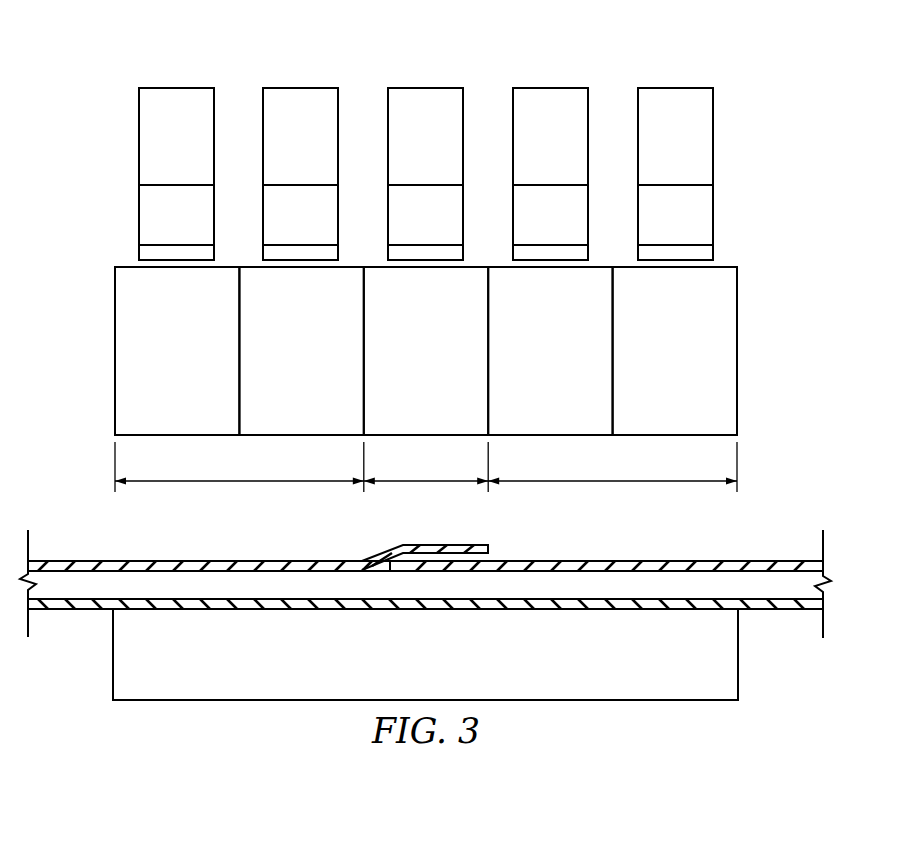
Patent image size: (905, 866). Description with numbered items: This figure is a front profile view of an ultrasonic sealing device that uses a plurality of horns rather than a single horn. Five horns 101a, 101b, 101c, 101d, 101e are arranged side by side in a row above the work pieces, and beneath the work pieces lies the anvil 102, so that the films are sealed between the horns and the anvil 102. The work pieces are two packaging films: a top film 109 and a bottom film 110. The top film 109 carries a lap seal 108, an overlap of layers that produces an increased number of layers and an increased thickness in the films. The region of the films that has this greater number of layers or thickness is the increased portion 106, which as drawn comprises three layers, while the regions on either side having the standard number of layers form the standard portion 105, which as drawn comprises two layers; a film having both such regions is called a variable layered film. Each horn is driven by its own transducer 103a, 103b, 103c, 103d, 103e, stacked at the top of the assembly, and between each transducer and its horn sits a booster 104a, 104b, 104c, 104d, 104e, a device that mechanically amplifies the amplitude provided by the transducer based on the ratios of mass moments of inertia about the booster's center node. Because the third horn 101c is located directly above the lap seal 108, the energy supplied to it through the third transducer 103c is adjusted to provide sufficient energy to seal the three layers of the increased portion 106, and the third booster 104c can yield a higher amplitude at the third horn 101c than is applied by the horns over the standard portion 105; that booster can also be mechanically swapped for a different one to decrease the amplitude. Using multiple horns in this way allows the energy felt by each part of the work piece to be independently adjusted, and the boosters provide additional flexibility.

The first horn 101a is at (151, 368).
The second horn 101b is at (328, 368).
The third horn 101c is at (400, 368).
The fourth horn 101d is at (524, 368).
The fifth horn 101e is at (701, 368).
The anvil 102 is at (113, 645).
The first transducer 103a is at (176, 88).
The second transducer 103b is at (301, 88).
The third transducer 103c is at (425, 88).
The fourth transducer 103d is at (551, 88).
The fifth transducer 103e is at (675, 88).
The first booster 104a is at (151, 228).
The second booster 104b is at (275, 228).
The third booster 104c is at (400, 228).
The fourth booster 104d is at (525, 228).
The fifth booster 104e is at (650, 228).
The standard portion 105 is at (262, 483).
The increased portion 106 is at (415, 483).
The lap seal 108 is at (479, 545).
The top film 109 is at (106, 560).
The bottom film 110 is at (213, 609).